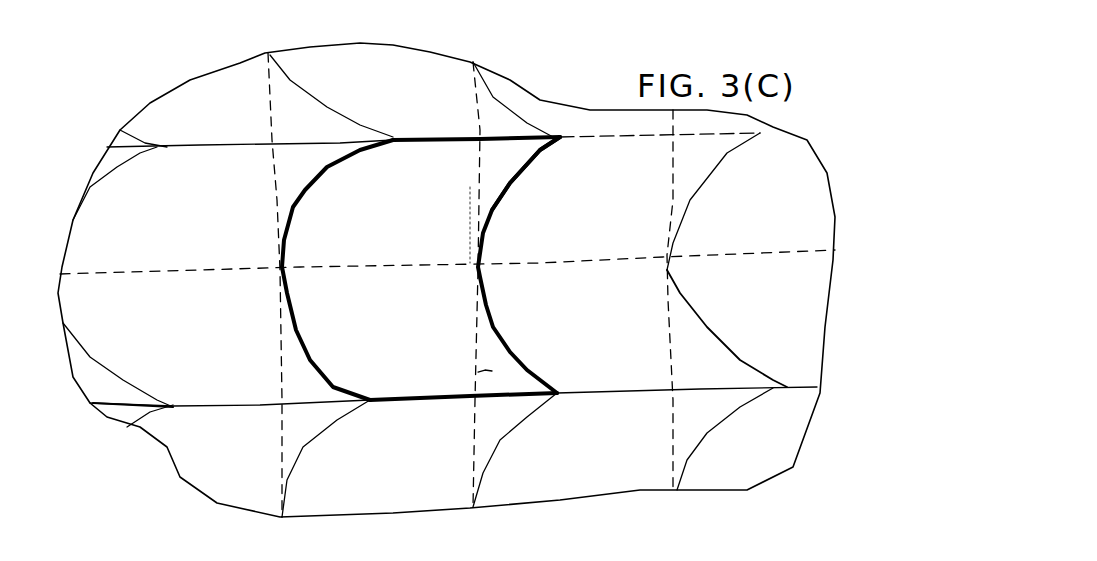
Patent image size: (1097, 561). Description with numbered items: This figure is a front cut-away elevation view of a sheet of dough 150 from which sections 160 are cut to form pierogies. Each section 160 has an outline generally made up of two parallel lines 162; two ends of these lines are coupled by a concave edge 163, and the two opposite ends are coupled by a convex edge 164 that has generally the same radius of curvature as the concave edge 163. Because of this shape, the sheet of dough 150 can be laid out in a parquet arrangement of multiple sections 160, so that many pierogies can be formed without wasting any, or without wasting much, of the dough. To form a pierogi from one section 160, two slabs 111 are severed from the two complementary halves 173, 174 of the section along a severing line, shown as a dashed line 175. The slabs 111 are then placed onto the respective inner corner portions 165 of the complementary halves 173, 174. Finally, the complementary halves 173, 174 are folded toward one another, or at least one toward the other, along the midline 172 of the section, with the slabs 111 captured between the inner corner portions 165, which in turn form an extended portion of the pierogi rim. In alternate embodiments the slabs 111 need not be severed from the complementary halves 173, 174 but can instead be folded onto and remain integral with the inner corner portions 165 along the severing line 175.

The sheet of dough 150 is at (446, 280).
The section 160 is at (813, 138).
The slab 111 is at (519, 265).
The parallel line 162 is at (565, 266).
The concave edge 163 is at (523, 173).
The convex edge 164 is at (337, 270).
The inner corner portion 165 is at (442, 284).
The midline 172 is at (321, 285).
The complementary half 173 is at (453, 369).
The complementary half 174 is at (250, 159).
The severing line 175 is at (493, 380).